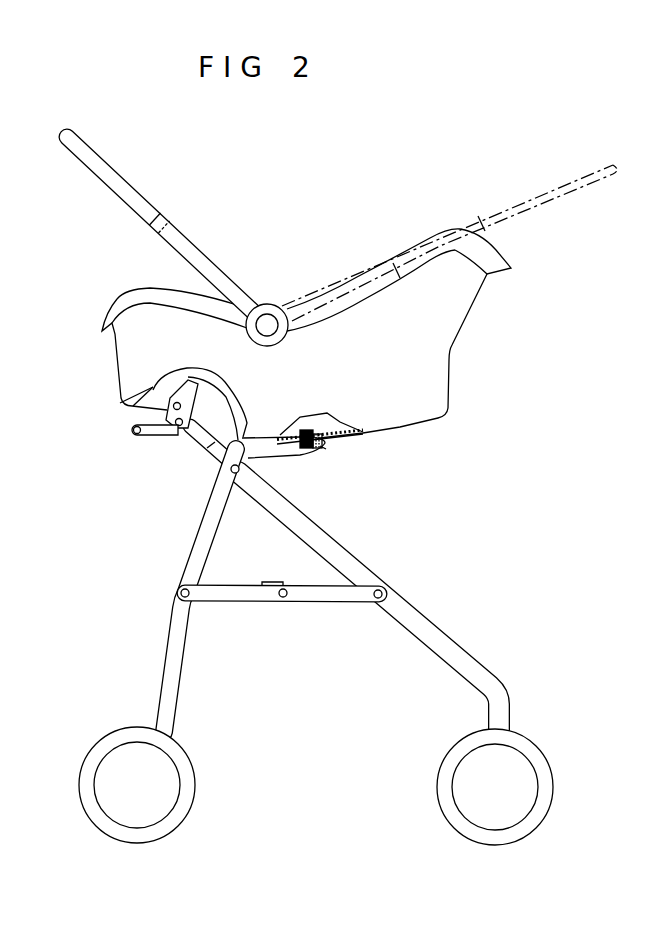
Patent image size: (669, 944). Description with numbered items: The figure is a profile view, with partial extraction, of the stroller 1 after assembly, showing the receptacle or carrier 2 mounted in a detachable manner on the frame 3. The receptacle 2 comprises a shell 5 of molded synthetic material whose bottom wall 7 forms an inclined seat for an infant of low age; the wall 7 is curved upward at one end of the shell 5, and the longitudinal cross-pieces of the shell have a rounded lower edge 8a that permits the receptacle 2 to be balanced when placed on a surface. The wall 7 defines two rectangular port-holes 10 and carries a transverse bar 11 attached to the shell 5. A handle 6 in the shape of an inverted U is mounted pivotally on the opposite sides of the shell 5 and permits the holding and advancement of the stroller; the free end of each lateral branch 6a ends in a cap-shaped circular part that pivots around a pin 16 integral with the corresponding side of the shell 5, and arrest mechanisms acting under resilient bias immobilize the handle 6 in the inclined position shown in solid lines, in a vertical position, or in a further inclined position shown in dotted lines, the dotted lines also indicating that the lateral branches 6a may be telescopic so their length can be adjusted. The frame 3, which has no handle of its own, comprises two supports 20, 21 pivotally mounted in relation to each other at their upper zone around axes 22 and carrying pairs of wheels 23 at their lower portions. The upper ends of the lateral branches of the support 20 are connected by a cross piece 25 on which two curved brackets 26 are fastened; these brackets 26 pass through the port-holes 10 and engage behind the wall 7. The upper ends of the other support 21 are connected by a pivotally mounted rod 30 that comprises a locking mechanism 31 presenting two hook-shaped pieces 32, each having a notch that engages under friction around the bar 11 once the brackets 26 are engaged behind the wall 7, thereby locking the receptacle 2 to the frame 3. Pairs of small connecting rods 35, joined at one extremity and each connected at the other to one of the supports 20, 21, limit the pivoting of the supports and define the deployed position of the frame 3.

The stroller 1 is at (359, 493).
The receptacle or carrier 2 is at (339, 348).
The frame 3 is at (340, 596).
The shell 5 is at (450, 320).
The handle 6 is at (91, 180).
The lateral branch 6a is at (152, 214).
The bottom wall 7 is at (389, 239).
The lower edge 8a is at (421, 427).
The port-hole 10 is at (327, 446).
The transverse bar 11 is at (167, 403).
The pin 16 is at (279, 331).
The support 20 is at (158, 660).
The support 21 is at (473, 653).
The axis 22 is at (239, 480).
The wheels 23 is at (203, 790).
The cross piece 25 is at (326, 449).
The curved bracket 26 is at (311, 427).
The rod 30 is at (178, 434).
The locking mechanism 31 is at (134, 438).
The hook-shaped piece 32 is at (187, 386).
The small connecting rods 35 is at (267, 606).